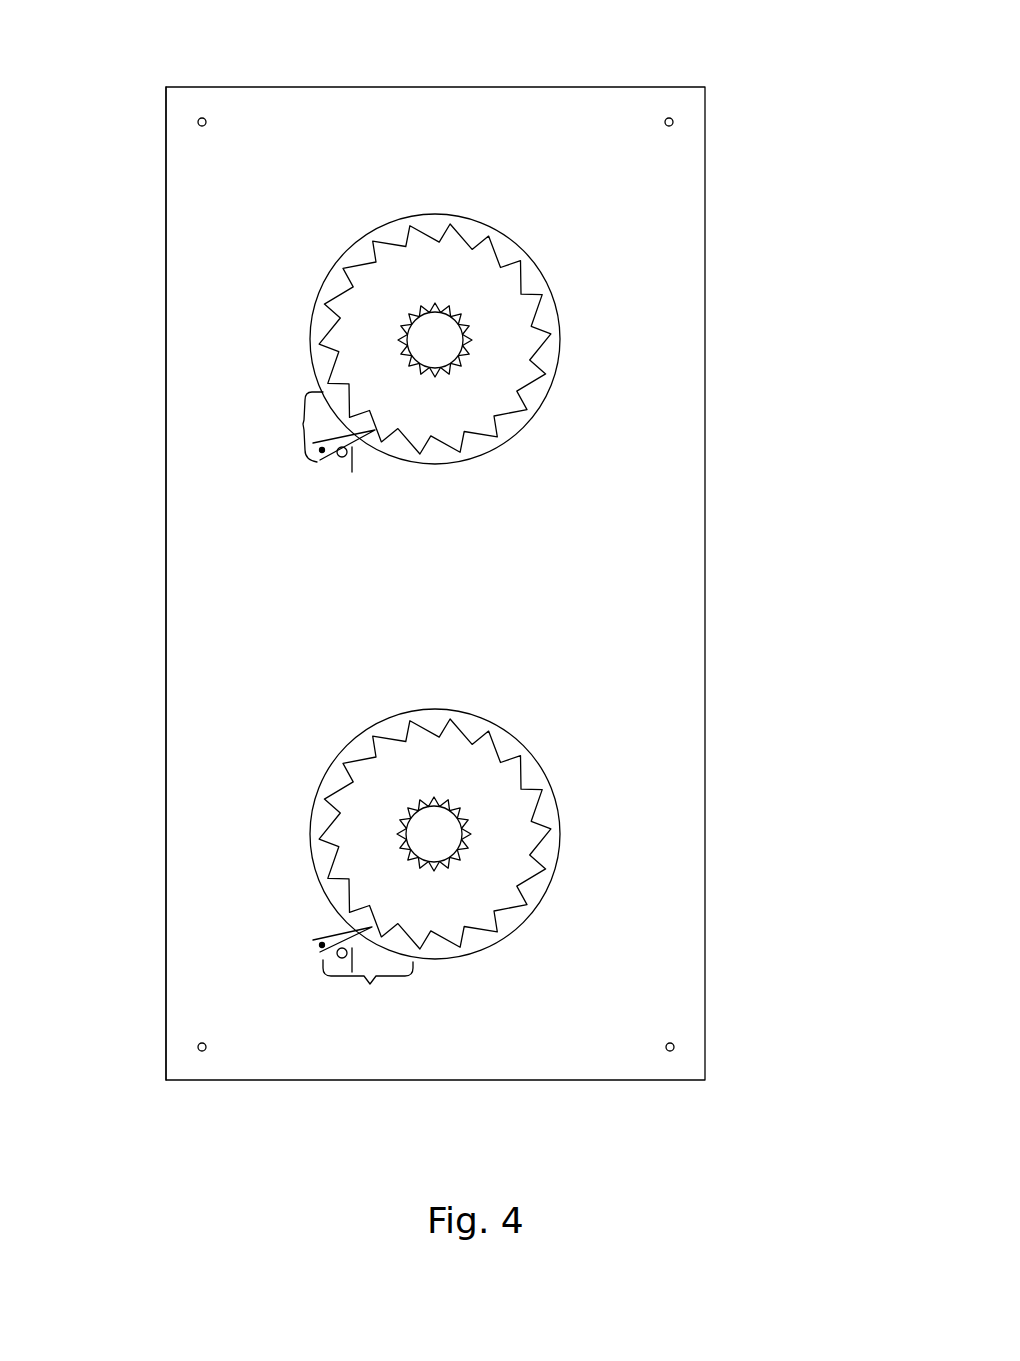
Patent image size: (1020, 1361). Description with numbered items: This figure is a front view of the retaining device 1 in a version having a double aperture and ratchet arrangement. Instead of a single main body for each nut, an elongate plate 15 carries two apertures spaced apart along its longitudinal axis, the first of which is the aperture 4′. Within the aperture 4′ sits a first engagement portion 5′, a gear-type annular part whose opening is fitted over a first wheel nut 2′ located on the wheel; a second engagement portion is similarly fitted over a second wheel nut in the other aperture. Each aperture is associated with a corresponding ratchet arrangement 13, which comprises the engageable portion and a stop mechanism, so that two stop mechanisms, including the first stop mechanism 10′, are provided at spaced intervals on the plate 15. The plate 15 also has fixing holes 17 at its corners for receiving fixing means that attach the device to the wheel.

The retaining device 1 is at (722, 213).
The elongate plate 15 is at (531, 113).
The fixing holes 17 is at (201, 117).
The first aperture 4′ is at (552, 321).
The first wheel nut 2′ is at (452, 340).
The first engagement portion 5′ is at (500, 407).
The ratchet arrangement 13 is at (302, 424).
The first stop mechanism 10′ is at (330, 457).